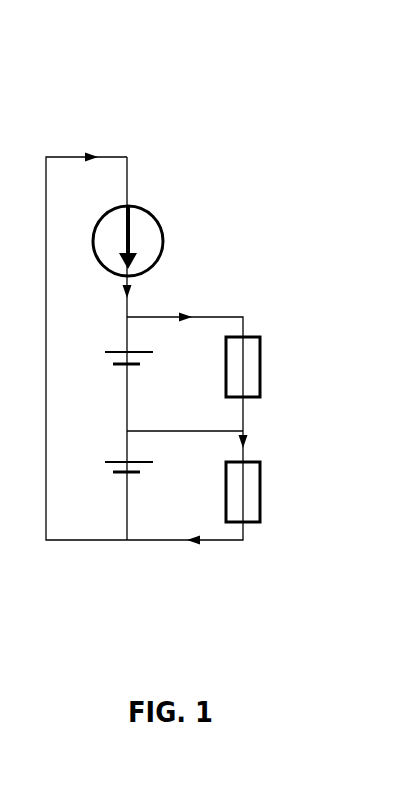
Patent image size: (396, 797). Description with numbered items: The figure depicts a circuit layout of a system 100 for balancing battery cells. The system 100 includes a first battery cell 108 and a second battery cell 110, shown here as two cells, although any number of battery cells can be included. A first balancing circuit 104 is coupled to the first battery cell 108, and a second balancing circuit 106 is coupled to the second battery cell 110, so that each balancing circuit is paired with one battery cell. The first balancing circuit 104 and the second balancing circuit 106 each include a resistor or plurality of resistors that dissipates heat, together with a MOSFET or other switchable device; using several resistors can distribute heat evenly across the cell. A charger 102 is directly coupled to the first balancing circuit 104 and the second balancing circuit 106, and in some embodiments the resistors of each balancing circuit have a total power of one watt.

The system 100 is at (246, 87).
The charger 102 is at (186, 238).
The first balancing circuit 104 is at (279, 367).
The second balancing circuit 106 is at (279, 495).
The first battery cell 108 is at (98, 370).
The second battery cell 110 is at (98, 478).